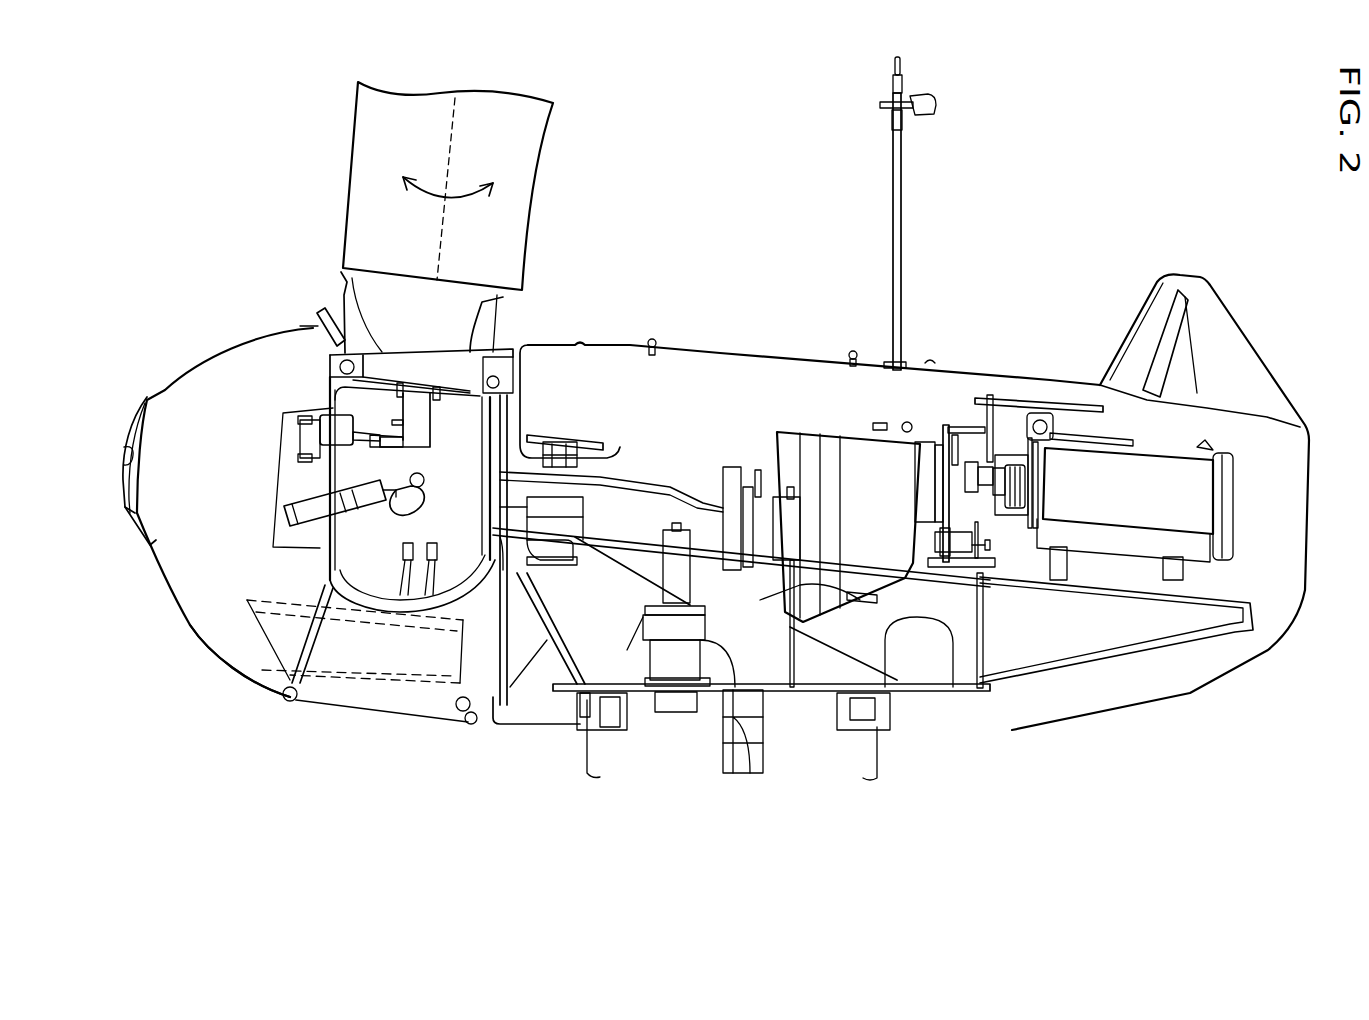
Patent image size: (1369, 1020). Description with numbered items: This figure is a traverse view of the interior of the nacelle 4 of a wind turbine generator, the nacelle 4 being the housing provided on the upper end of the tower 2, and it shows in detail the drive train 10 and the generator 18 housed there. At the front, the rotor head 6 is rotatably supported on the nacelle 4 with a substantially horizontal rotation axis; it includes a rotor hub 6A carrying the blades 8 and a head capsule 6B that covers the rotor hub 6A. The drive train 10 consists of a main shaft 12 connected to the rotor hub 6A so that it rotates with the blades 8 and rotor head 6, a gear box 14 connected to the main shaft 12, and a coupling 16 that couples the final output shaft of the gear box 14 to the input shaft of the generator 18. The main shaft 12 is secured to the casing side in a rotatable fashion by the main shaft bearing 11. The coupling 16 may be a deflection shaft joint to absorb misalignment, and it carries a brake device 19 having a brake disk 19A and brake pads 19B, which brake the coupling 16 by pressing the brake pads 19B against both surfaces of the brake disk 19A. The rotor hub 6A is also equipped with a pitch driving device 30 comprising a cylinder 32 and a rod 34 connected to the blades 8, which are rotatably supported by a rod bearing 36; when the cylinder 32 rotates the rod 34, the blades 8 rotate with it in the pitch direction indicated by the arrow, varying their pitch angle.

The tower 2 is at (880, 766).
The nacelle 4 is at (1047, 383).
The rotor head 6 is at (113, 392).
The rotor hub 6A is at (307, 575).
The head capsule 6B is at (218, 662).
The blades 8 is at (367, 148).
The drive train 10 is at (712, 380).
The main shaft bearing 11 is at (593, 453).
The main shaft 12 is at (628, 473).
The gear box 14 is at (857, 447).
The coupling 16 is at (1000, 480).
The generator 18 is at (1170, 460).
The brake device 19 is at (982, 508).
The brake disk 19A is at (942, 435).
The brake pads 19B is at (965, 528).
The pitch driving device 30 is at (292, 345).
The cylinder 32 is at (340, 423).
The rod 34 is at (423, 417).
The rod bearing 36 is at (340, 348).